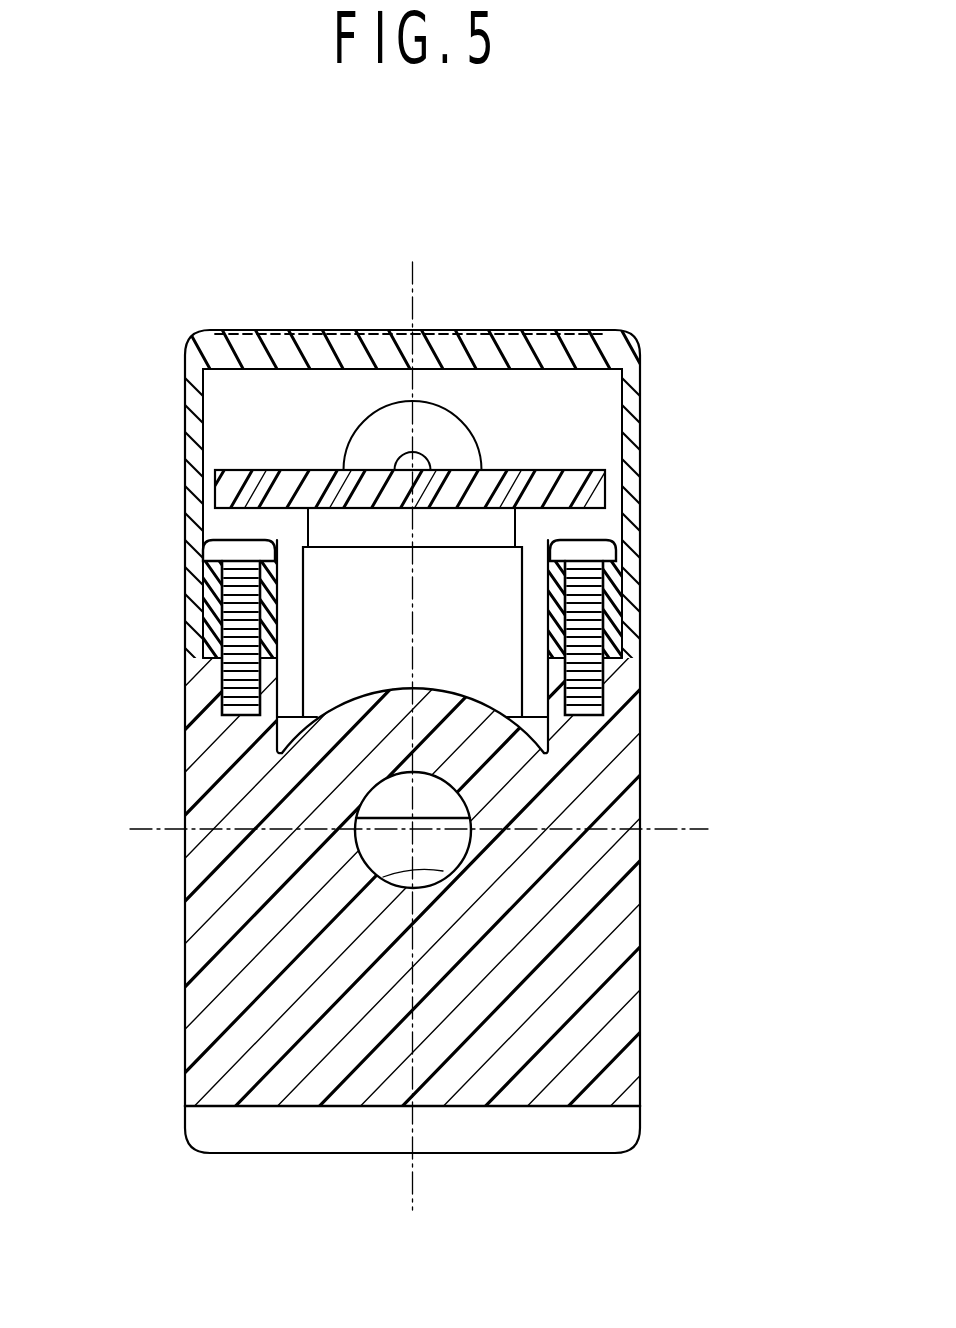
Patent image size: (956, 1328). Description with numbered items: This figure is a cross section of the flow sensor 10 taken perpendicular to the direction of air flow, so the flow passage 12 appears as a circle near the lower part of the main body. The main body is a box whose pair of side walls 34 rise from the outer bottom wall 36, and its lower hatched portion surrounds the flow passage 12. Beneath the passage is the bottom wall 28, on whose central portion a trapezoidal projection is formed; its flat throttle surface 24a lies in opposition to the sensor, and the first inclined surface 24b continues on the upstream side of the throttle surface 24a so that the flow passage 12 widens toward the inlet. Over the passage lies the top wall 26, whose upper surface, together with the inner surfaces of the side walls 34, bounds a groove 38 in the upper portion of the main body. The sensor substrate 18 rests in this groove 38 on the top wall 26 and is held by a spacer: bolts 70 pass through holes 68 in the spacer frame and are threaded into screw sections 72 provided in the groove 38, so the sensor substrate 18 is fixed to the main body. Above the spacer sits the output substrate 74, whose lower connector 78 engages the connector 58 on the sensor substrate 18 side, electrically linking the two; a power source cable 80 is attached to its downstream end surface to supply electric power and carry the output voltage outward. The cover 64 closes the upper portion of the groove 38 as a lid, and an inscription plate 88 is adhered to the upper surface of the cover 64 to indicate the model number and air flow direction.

The flow sensor 10 is at (251, 160).
The flow passage 12 is at (447, 848).
The sensor substrate 18 is at (537, 727).
The throttle surface 24a is at (442, 810).
The first inclined surface 24b is at (383, 862).
The top wall 26 is at (380, 792).
The bottom wall 28 is at (398, 869).
The side walls 34 is at (190, 941).
The outer bottom wall 36 is at (566, 1152).
The groove 38 is at (287, 520).
The connector 58 is at (490, 598).
The cover 64 is at (636, 332).
The holes 68 is at (218, 624).
The bolts 70 is at (226, 540).
The screw sections 72 is at (224, 698).
The output substrate 74 is at (327, 466).
The connector 78 is at (452, 527).
The power source cable 80 is at (437, 427).
The inscription plate 88 is at (348, 330).